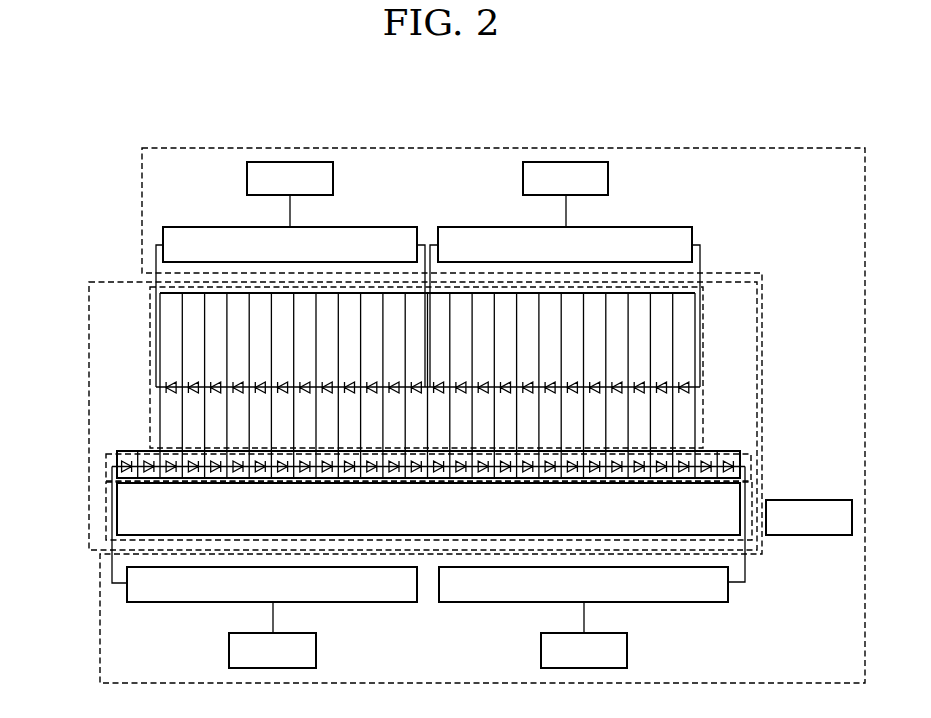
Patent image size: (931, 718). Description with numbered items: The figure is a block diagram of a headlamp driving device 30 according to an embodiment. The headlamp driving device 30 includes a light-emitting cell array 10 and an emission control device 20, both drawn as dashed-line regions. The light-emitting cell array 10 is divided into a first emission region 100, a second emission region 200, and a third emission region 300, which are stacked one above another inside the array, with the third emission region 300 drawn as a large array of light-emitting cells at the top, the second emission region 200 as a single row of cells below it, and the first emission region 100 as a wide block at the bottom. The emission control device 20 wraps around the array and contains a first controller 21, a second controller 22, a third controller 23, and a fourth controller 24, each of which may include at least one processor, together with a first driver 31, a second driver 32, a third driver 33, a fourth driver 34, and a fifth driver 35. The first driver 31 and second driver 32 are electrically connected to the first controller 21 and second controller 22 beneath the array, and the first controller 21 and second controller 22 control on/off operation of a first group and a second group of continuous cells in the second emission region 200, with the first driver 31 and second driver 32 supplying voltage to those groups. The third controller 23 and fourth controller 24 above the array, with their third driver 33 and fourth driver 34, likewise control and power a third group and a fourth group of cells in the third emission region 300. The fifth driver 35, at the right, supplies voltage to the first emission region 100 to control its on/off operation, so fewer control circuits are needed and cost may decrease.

The headlamp driving device 30 is at (88, 108).
The emission control device 20 is at (142, 209).
The light-emitting cell array 10 is at (89, 323).
The third emission region 300 is at (150, 403).
The second emission region 200 is at (112, 466).
The first emission region 100 is at (106, 508).
The first controller 21 is at (375, 602).
The second controller 22 is at (692, 602).
The third controller 23 is at (381, 227).
The fourth controller 24 is at (484, 227).
The first driver 31 is at (229, 648).
The second driver 32 is at (541, 648).
The third driver 33 is at (247, 178).
The fourth driver 34 is at (608, 179).
The fifth driver 35 is at (809, 500).